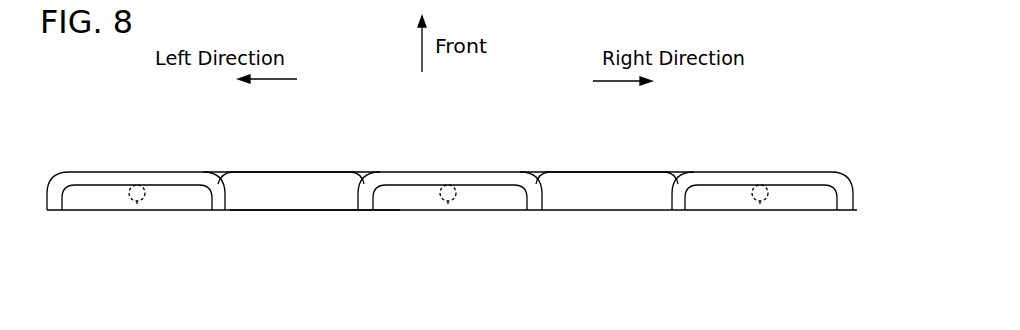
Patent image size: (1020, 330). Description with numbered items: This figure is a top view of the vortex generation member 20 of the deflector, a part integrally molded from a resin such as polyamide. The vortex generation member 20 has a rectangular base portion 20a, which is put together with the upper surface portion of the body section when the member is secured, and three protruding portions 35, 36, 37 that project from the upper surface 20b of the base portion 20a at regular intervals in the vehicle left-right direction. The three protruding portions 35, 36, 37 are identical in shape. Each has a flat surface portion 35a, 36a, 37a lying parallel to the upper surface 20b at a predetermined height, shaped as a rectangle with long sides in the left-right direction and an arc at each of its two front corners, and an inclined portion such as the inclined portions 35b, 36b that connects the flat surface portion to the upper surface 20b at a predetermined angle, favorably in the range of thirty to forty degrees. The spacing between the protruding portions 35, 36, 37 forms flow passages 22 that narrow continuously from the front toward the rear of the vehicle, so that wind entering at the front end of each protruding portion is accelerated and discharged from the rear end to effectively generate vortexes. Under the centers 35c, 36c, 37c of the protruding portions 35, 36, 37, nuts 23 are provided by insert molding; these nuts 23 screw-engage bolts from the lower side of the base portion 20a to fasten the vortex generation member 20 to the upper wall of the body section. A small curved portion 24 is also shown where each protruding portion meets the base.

The vortex generation member 20 is at (303, 195).
The base portion 20a is at (316, 212).
The upper surface 20b is at (271, 188).
The flow passage 22 is at (278, 202).
The nut 23 is at (137, 203).
The curved fillet portion 24 is at (230, 172).
The protruding portion 35 is at (749, 193).
The flat surface portion 35a is at (712, 202).
The inclined portion 35b is at (679, 202).
The center of protruding portion 35c is at (757, 185).
The protruding portion 36 is at (438, 194).
The flat surface portion 36a is at (418, 202).
The inclined portion 36b is at (366, 204).
The center of protruding portion 36c is at (447, 185).
The protruding portion 37 is at (127, 192).
The flat surface portion 37a is at (85, 202).
The center of protruding portion 37c is at (137, 185).